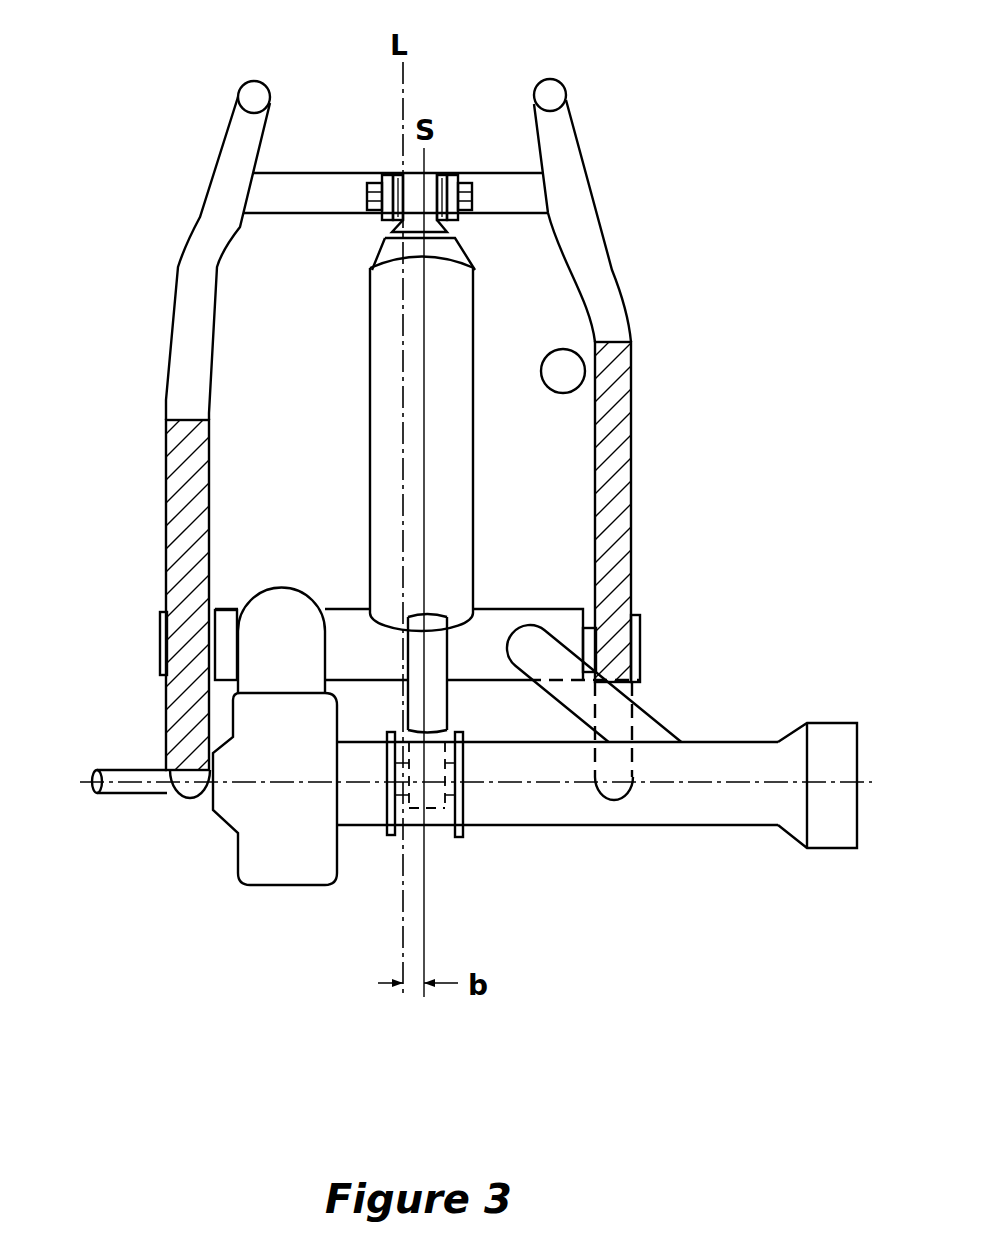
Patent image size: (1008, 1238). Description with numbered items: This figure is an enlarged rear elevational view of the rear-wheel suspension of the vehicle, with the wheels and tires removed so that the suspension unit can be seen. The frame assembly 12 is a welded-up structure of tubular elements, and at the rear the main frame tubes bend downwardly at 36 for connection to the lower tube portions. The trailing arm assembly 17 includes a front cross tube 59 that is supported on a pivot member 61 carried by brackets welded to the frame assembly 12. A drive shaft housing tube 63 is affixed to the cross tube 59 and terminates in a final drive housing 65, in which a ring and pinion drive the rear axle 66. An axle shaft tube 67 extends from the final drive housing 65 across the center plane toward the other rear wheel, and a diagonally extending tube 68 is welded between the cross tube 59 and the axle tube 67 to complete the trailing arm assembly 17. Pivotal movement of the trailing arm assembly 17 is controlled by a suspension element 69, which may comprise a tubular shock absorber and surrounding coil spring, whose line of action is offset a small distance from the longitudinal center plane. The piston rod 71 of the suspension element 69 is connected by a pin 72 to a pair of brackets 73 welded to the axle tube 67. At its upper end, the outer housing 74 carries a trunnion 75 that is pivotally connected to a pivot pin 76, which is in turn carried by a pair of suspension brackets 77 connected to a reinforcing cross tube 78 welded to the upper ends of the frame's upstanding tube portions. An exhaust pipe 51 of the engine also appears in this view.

The frame assembly 12 is at (622, 230).
The reinforcing cross tube 78 is at (290, 172).
The pivot pin 76 is at (397, 172).
The trunnion 75 is at (440, 172).
The suspension brackets 77 is at (460, 172).
The outer housing 74 is at (368, 313).
The suspension element 69 is at (462, 436).
The exhaust pipe 51 is at (548, 353).
The downwardly bent portion of main frame tube 36 is at (633, 428).
The drive shaft housing tube 63 is at (167, 398).
The pivot member 61 is at (159, 637).
The front cross tube 59 is at (503, 607).
The diagonally extending tube 68 is at (662, 720).
The rear axle 66 is at (108, 770).
The final drive housing 65 is at (238, 858).
The piston rod 71 is at (447, 703).
The brackets 73 is at (464, 760).
The pin 72 is at (448, 835).
The trailing arm assembly 17 is at (579, 836).
The axle shaft tube 67 is at (703, 825).